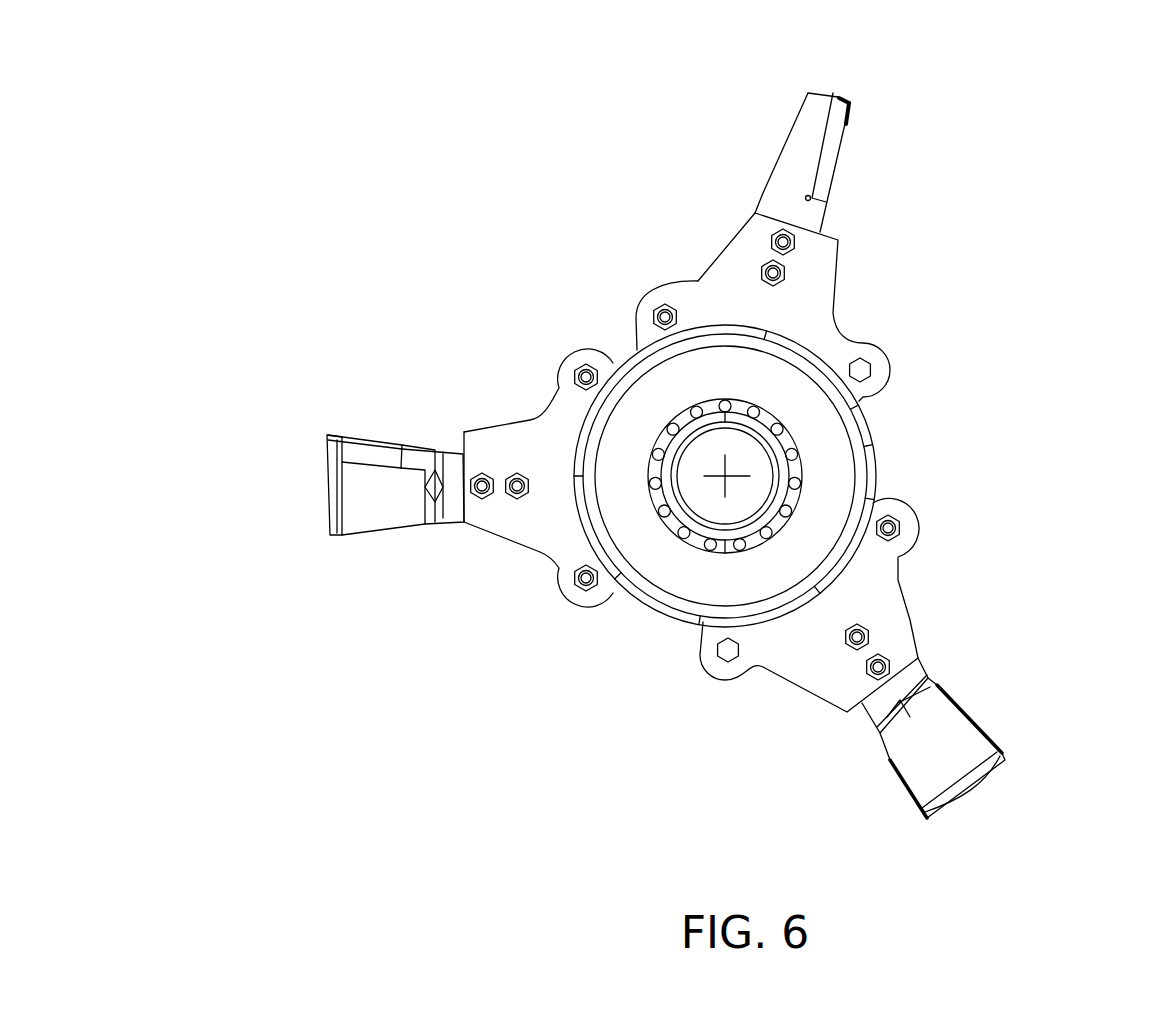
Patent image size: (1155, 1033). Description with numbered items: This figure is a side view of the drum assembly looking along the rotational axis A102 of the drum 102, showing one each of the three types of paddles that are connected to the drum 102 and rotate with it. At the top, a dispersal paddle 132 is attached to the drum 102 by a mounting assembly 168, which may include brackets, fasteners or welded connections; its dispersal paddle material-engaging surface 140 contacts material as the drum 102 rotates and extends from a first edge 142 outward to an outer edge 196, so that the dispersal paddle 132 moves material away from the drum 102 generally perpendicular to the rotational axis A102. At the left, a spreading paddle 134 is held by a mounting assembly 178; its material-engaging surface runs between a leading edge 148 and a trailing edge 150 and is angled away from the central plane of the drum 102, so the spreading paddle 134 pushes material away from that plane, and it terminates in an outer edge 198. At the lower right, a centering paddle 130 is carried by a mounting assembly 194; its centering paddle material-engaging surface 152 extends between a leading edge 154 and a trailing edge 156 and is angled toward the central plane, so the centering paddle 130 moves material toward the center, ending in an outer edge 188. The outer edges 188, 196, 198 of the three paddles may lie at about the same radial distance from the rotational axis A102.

The drum 102 is at (877, 463).
The rotational axis A102 is at (735, 470).
The mounting assembly 168 is at (676, 254).
The dispersal paddle 132 is at (808, 92).
The dispersal paddle material-engaging surface 140 is at (833, 163).
The first edge 142 is at (833, 135).
The outer edge 196 is at (838, 96).
The mounting assembly 178 is at (528, 572).
The spreading paddle 134 is at (327, 508).
The outer edge 198 is at (327, 483).
The leading edge 148 is at (388, 437).
The trailing edge 150 is at (363, 534).
The mounting assembly 194 is at (950, 608).
The leading edge 154 is at (897, 773).
The trailing edge 156 is at (967, 710).
The centering paddle material-engaging surface 152 is at (940, 743).
The centering paddle 130 is at (978, 773).
The outer edge 188 is at (933, 820).